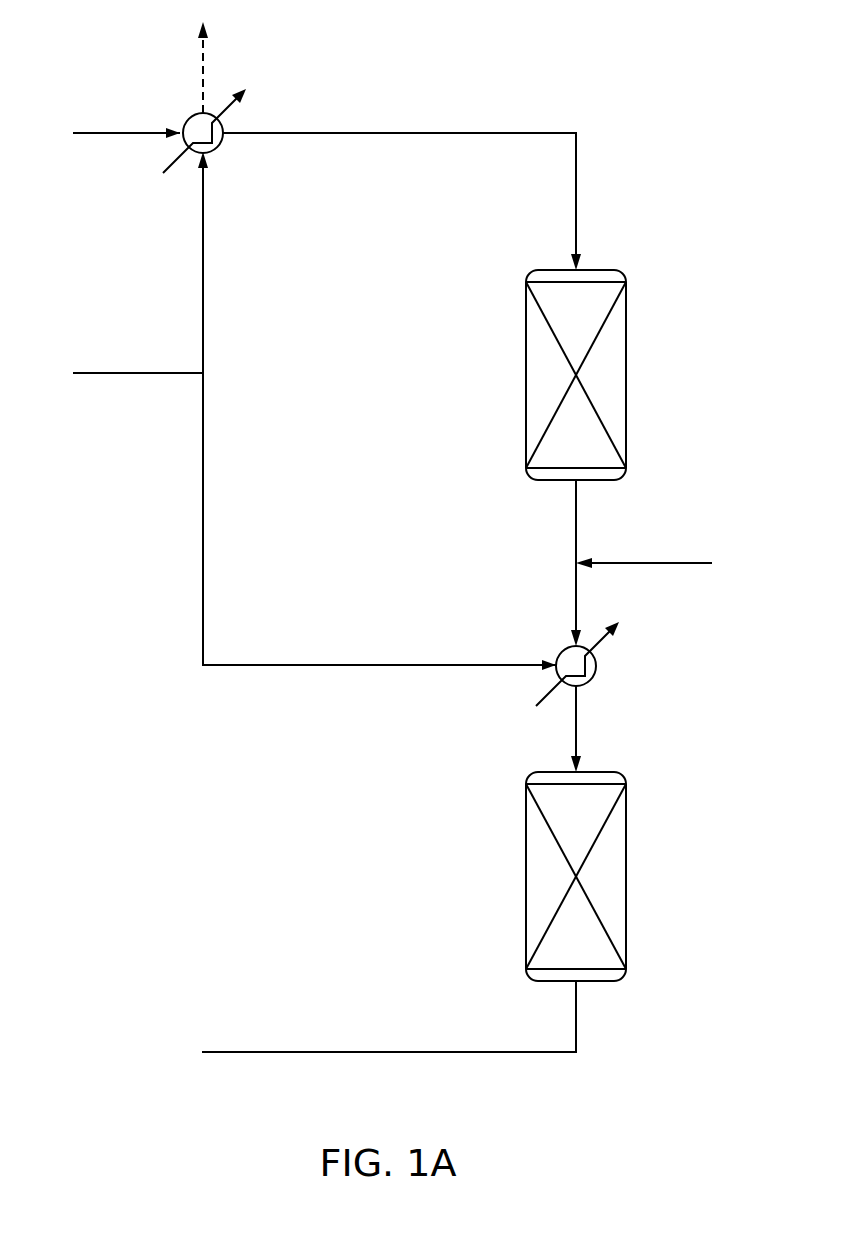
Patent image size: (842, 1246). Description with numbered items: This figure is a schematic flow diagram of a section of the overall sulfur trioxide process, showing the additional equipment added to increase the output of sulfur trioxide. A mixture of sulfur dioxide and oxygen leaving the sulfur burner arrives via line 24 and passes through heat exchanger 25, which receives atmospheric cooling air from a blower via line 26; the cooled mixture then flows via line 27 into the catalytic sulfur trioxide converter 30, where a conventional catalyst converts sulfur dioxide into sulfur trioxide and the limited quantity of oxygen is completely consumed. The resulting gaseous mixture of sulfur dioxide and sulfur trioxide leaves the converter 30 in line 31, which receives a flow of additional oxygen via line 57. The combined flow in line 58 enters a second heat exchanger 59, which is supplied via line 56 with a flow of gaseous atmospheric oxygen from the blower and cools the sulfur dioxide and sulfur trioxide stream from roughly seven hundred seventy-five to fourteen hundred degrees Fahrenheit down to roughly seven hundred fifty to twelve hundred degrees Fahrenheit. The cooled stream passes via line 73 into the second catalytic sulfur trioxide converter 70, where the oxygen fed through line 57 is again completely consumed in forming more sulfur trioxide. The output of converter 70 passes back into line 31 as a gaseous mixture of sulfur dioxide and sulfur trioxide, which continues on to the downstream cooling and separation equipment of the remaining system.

The line 24 is at (105, 132).
The heat exchanger 25 is at (220, 150).
The line 26 is at (204, 222).
The line 27 is at (384, 133).
The catalytic sulfur trioxide converter 30 is at (627, 378).
The line 31 is at (575, 518).
The line 56 is at (204, 512).
The line 57 is at (678, 562).
The line 58 is at (575, 603).
The heat exchanger 59 is at (598, 666).
The second catalytic sulfur trioxide converter 70 is at (627, 882).
The line 73 is at (575, 730).